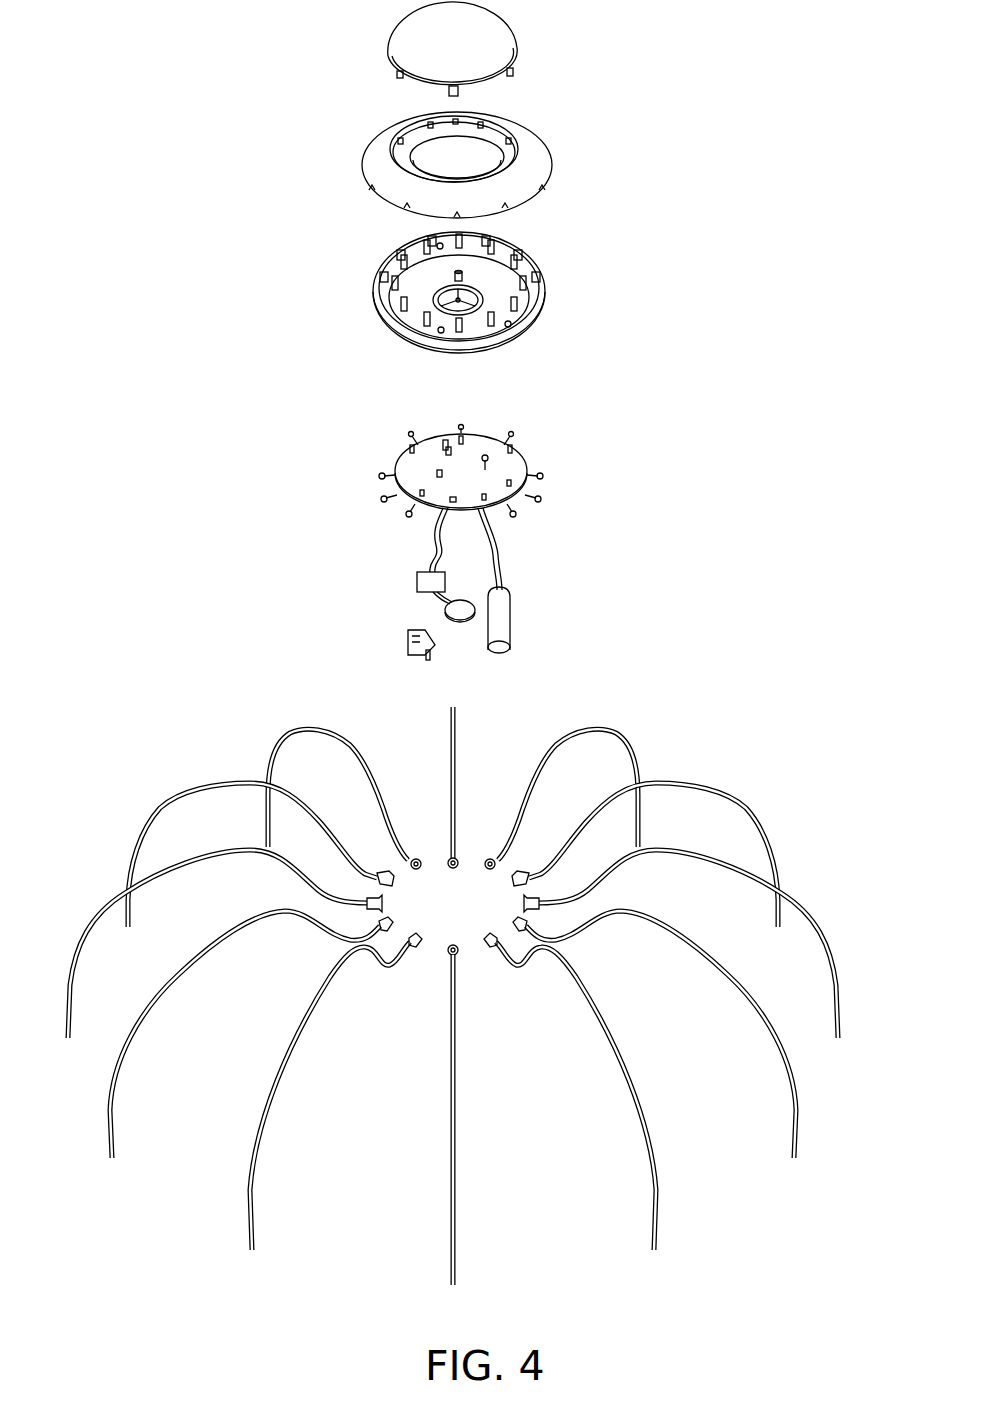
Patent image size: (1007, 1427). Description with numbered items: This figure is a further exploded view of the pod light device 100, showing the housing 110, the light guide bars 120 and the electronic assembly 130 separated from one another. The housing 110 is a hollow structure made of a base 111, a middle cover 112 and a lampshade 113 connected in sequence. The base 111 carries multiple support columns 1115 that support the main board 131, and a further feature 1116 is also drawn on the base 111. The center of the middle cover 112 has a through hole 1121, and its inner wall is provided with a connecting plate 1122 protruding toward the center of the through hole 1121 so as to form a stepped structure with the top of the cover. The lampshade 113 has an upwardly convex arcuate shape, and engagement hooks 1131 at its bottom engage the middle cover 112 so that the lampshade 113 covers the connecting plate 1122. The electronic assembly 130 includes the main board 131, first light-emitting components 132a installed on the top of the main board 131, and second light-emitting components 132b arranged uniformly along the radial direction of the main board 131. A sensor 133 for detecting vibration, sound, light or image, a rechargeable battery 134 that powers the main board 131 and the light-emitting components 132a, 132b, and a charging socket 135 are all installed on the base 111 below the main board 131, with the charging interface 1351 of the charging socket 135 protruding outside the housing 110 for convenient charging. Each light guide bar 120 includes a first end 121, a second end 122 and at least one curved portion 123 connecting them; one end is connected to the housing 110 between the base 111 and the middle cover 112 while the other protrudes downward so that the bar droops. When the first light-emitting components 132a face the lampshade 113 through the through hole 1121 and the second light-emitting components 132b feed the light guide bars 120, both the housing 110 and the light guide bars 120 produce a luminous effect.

The pod light device 100 is at (113, 32).
The housing 110 is at (288, 17).
The base 111 is at (375, 265).
The support columns 1115 is at (520, 298).
The central post 1116 is at (470, 276).
The middle cover 112 is at (382, 172).
The through hole 1121 is at (440, 153).
The connecting plate 1122 is at (510, 155).
The lampshade 113 is at (435, 38).
The engagement hooks 1131 is at (455, 90).
The light guide bars 120 is at (108, 755).
The first end 121 is at (362, 867).
The second end 122 is at (135, 847).
The curved portion 123 is at (205, 790).
The electronic assembly 130 is at (268, 493).
The main board 131 is at (465, 465).
The first light-emitting components 132a is at (445, 445).
The second light-emitting components 132b is at (385, 475).
The sensor 133 is at (455, 607).
The rechargeable battery 134 is at (500, 612).
The charging socket 135 is at (410, 635).
The charging interface 1351 is at (425, 655).